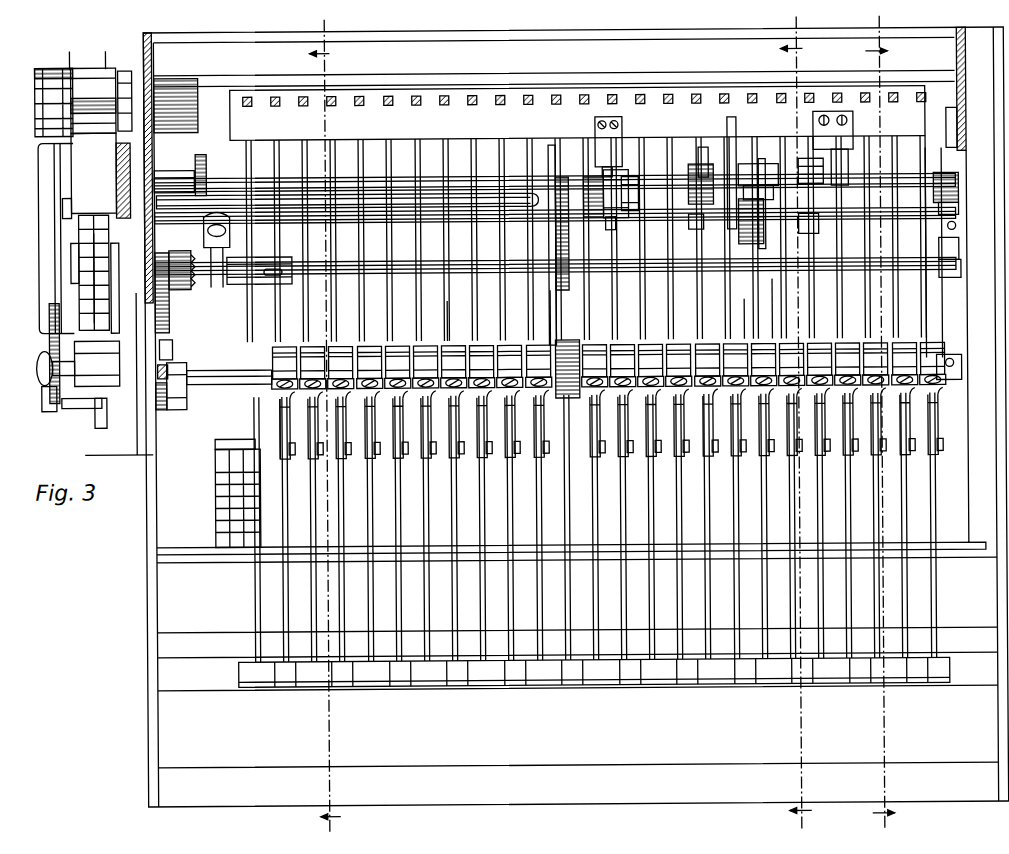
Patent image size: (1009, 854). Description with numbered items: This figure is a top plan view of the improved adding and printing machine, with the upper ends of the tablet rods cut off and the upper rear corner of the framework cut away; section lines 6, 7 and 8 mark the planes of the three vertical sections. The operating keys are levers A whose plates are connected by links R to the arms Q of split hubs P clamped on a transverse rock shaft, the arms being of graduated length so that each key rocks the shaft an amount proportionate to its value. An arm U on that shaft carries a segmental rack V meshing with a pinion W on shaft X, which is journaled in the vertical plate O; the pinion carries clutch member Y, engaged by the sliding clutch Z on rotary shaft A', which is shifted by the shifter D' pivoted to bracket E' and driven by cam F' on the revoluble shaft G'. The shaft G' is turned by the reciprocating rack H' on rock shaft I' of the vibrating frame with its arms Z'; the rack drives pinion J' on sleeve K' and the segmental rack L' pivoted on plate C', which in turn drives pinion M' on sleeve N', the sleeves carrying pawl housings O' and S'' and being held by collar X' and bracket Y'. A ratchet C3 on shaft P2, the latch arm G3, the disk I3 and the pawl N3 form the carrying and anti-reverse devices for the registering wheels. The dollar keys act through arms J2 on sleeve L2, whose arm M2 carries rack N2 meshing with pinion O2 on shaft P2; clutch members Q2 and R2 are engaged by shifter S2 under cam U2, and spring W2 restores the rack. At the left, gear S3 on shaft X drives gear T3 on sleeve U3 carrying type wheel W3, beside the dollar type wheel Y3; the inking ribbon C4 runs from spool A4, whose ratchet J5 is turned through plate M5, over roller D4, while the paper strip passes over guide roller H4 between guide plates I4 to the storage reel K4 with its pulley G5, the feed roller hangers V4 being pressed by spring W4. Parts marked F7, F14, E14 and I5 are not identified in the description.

The key levers A is at (575, 417).
The section line 6- 6 is at (796, 425).
The section line 7- 7 is at (325, 428).
The section line 8- 8 is at (880, 425).
The revoluble shaft G' is at (555, 132).
The shaft X is at (347, 162).
The rock shaft I' is at (555, 231).
The shaft P2 is at (405, 262).
The pinion W is at (556, 168).
The segmental rack V is at (571, 284).
The arm U is at (557, 302).
The vertical plate O is at (556, 357).
The bracket E' is at (616, 165).
The clutch member Y is at (608, 147).
The sliding clutch member Z is at (640, 179).
The shifter D' is at (604, 234).
The cam F' is at (570, 320).
The reciprocating rack H' is at (766, 309).
The arms Z' is at (957, 263).
The split hubs P is at (457, 345).
The links R is at (458, 470).
The arms Q is at (683, 455).
The arms J2 is at (290, 460).
The sliding clutch member R2 is at (264, 256).
The rotary shaft A' is at (699, 144).
The housing S'' is at (727, 167).
The vertical plate C' is at (758, 149).
The second pinion M' is at (772, 181).
The collar X' is at (695, 174).
The pinion J' is at (758, 174).
The sleeve K' is at (801, 162).
The bracket Y' is at (833, 148).
The pawl N3 is at (962, 125).
The latch arm G3 is at (960, 170).
The disk I3 is at (960, 196).
The second sleeve N' is at (688, 227).
The segmental rack L' is at (732, 224).
The housing O' is at (802, 230).
The ratchet C3 is at (960, 245).
The collar F7 is at (961, 268).
The guide roller H4 is at (42, 100).
The ratchet J5 is at (118, 147).
The inking ribbon C4 is at (94, 173).
The rods F14 is at (90, 53).
The vertical plate M5 is at (128, 68).
The spool A4 is at (45, 153).
The guide plates I4 is at (49, 239).
The roller D4 is at (64, 200).
The type wheel W3 is at (80, 226).
The second gear wheel T3 is at (95, 240).
The second type wheel Y3 is at (74, 262).
The gear wheel S3 is at (134, 172).
The cam U2 is at (197, 167).
The pinion O2 is at (164, 258).
The shifter S2 is at (204, 249).
The clutch member Q2 is at (170, 300).
The segmental rack N2 is at (173, 340).
The arm M2 is at (168, 360).
The sleeve L2 is at (190, 400).
The spring W2 is at (215, 447).
The threaded rod I5 is at (52, 312).
The hangers V4 is at (46, 352).
The cylinder E14 is at (96, 363).
The curved disk or pulley G5 is at (42, 396).
The storage reel K4 is at (72, 406).
The curved spring W4 is at (98, 422).
The sleeve U3 is at (120, 288).